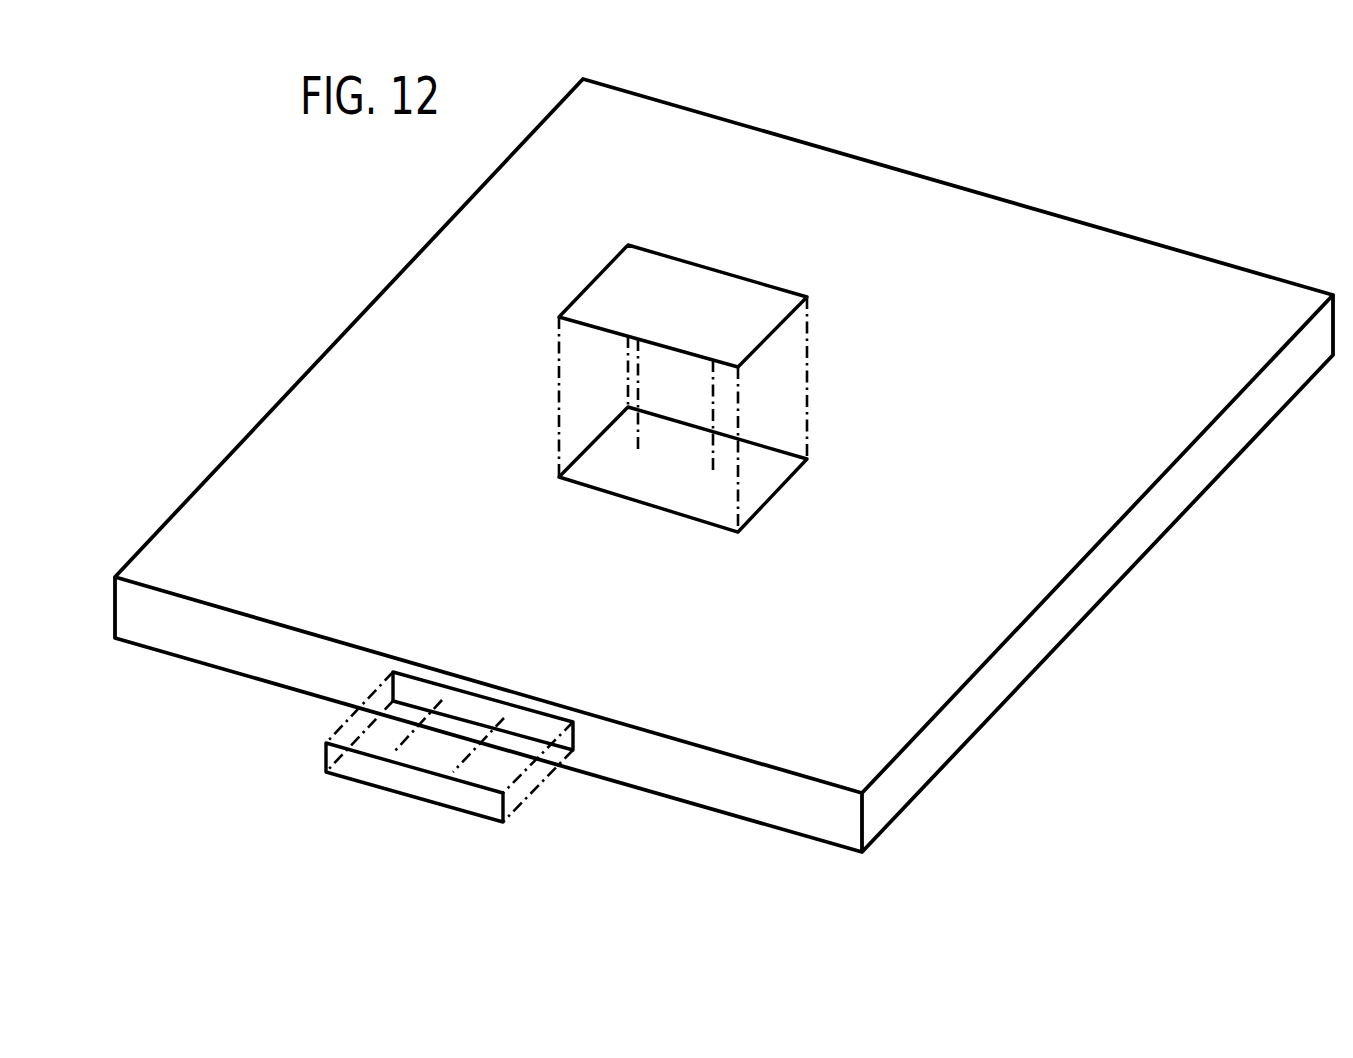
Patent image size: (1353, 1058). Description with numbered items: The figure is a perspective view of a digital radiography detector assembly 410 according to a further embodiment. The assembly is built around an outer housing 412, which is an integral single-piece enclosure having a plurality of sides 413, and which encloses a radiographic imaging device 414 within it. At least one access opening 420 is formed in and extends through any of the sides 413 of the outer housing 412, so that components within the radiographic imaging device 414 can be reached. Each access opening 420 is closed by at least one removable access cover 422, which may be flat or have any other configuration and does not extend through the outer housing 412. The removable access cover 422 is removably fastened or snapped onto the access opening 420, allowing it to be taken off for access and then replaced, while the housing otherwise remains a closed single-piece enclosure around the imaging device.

The digital radiography detector assembly 410 is at (1027, 165).
The outer housing 412 is at (1007, 576).
The sides 413 is at (660, 137).
The radiographic imaging device 414 is at (606, 467).
The access opening 420 is at (672, 495).
The removable access cover 422 is at (718, 288).